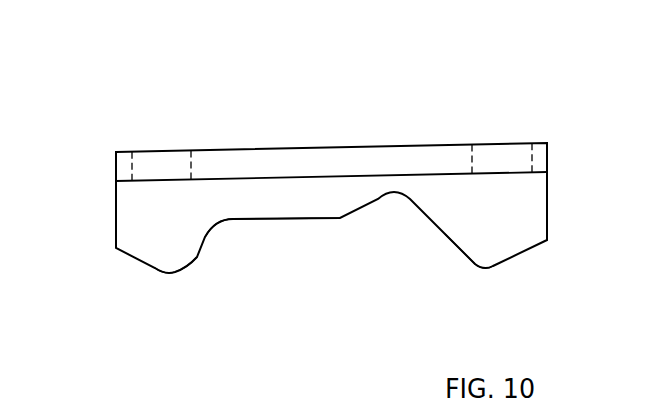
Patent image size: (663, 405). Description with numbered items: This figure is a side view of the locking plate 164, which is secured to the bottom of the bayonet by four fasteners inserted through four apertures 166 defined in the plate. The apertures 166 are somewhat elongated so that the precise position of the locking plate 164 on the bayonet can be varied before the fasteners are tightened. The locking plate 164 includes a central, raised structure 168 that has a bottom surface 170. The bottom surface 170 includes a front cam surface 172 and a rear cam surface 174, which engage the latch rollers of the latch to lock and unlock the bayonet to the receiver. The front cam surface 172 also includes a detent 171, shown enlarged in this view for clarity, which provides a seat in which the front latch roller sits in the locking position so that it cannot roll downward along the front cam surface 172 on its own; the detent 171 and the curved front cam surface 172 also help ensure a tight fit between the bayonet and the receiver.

The locking plate 164 is at (428, 78).
The apertures 166 is at (158, 170).
The central raised structure 168 is at (147, 215).
The bottom surface 170 is at (283, 220).
The detent 171 is at (217, 233).
The front cam surface 172 is at (195, 263).
The rear cam surface 174 is at (444, 238).